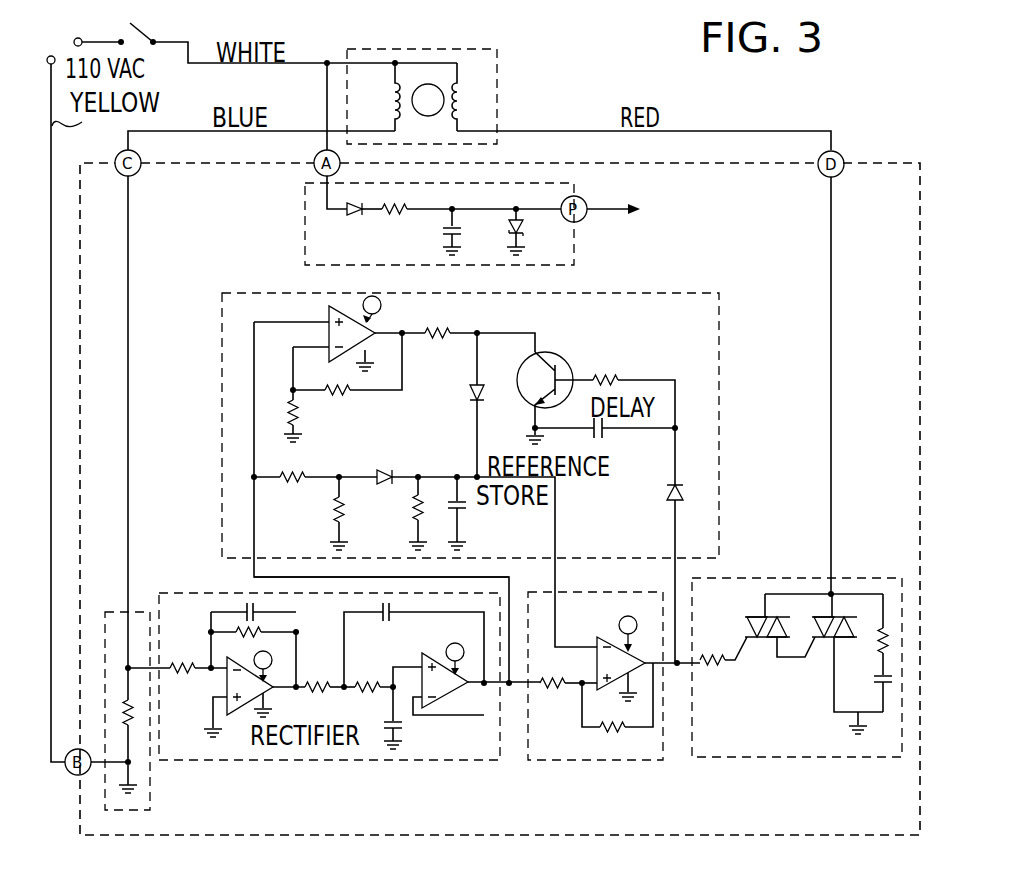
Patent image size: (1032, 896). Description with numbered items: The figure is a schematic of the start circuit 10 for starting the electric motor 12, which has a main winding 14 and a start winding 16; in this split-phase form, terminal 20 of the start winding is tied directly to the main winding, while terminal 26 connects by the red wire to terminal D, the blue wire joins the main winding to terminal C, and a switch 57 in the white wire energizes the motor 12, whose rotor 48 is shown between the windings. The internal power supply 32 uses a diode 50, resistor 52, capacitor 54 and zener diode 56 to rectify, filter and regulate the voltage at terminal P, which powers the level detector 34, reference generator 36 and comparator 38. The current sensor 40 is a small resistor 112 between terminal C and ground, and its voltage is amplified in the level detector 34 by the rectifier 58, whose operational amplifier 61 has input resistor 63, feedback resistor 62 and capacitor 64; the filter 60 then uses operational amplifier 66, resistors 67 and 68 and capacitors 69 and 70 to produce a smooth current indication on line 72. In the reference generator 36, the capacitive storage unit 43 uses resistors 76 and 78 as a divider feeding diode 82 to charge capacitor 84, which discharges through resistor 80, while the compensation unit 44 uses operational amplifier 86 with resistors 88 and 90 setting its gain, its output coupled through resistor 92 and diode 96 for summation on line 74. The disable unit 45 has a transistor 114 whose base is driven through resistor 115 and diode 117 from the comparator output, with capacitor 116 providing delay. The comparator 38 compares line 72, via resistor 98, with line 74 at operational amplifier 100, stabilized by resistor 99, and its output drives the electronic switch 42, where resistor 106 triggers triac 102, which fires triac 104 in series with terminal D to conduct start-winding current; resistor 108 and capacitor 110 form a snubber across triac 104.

The start circuit 10 is at (500, 514).
The electric motor 12 is at (488, 96).
The main winding 14 is at (392, 103).
The start winding 16 is at (464, 100).
The terminal of the start winding 20 is at (52, 56).
The terminal of the start winding 26 is at (85, 40).
The internal power supply 32 is at (305, 236).
The level detector 34 is at (329, 694).
The reference generator 36 is at (470, 412).
The comparator 38 is at (596, 694).
The current sensor 40 is at (211, 726).
The electronic switch 42 is at (797, 687).
The capacitive storage unit 43 is at (238, 522).
The compensation unit 44 is at (236, 356).
The disable unit 45 is at (588, 354).
The rotor 48 is at (429, 84).
The diode 50 is at (363, 202).
The resistor 52 is at (400, 216).
The capacitor 54 is at (446, 232).
The zener diode 56 is at (524, 234).
The switch 57 is at (160, 33).
The rectifier 58 is at (243, 722).
The filter 60 is at (416, 728).
The operational amplifier 61 is at (230, 718).
The feedback resistor 62 is at (250, 637).
The input resistor 63 is at (200, 661).
The capacitor 64 is at (242, 605).
The operational amplifier 66 is at (418, 658).
The resistor 67 is at (317, 680).
The resistor 68 is at (366, 696).
The capacitor 69 is at (378, 736).
The capacitor 70 is at (446, 464).
The line 72 is at (440, 386).
The line 74 is at (555, 543).
The resistor 76 is at (296, 488).
The resistor 78 is at (333, 520).
The resistor 80 is at (412, 522).
The diode 82 is at (385, 486).
The capacitor 84 is at (466, 506).
The operational amplifier 86 is at (329, 311).
The resistor 88 is at (290, 408).
The feedback resistor 90 is at (337, 400).
The resistor 92 is at (449, 331).
The diode 96 is at (482, 401).
The resistor 98 is at (572, 690).
The resistor 99 is at (600, 736).
The operational amplifier 100 is at (610, 638).
The triac 102 is at (752, 628).
The triac 104 is at (858, 619).
The resistor 106 is at (720, 672).
The resistor 108 is at (878, 652).
The capacitor 110 is at (890, 690).
The resistor 112 is at (138, 722).
The transistor 114 is at (545, 352).
The resistor 115 is at (625, 378).
The capacitor 116 is at (600, 440).
The diode 117 is at (667, 493).